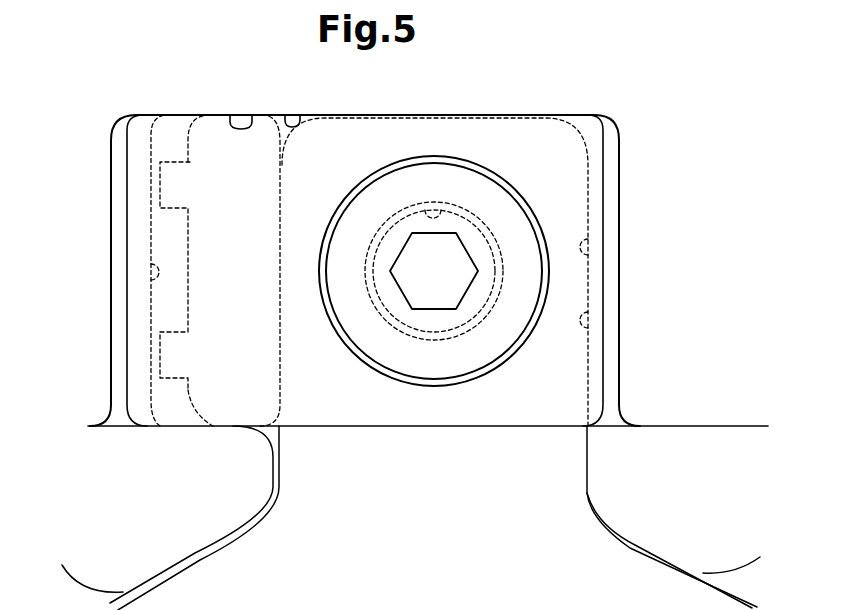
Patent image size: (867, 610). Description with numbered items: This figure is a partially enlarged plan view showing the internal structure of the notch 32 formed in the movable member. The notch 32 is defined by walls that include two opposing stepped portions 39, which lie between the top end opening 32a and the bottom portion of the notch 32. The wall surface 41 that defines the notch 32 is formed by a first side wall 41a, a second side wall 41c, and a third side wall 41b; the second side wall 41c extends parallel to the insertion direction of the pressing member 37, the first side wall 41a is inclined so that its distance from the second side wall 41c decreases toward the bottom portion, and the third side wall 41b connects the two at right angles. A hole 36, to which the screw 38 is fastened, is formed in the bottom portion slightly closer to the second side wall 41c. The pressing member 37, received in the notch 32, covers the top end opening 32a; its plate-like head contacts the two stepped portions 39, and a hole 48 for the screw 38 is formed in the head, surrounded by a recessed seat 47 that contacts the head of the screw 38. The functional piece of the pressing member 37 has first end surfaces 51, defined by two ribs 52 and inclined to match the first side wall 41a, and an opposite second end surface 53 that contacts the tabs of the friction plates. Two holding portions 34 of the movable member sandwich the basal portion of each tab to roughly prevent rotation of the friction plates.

The notch 32 is at (590, 321).
The top end opening 32a is at (610, 376).
The holding portions 34 is at (273, 484).
The hole 36 is at (441, 210).
The pressing member 37 is at (235, 406).
The screw 38 is at (470, 192).
The stepped portions 39 is at (111, 172).
The wall surface 41 is at (268, 98).
The first side wall 41a is at (151, 265).
The third side wall 41b is at (297, 119).
The second side wall 41c is at (590, 247).
The recessed seat 47 is at (528, 207).
The hole 48 is at (400, 212).
The first end surfaces 51 is at (160, 193).
The ribs 52 is at (188, 160).
The second end surface 53 is at (283, 193).